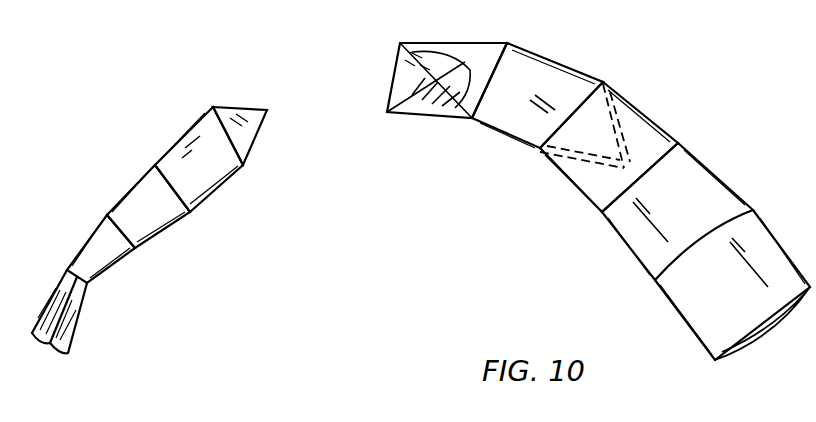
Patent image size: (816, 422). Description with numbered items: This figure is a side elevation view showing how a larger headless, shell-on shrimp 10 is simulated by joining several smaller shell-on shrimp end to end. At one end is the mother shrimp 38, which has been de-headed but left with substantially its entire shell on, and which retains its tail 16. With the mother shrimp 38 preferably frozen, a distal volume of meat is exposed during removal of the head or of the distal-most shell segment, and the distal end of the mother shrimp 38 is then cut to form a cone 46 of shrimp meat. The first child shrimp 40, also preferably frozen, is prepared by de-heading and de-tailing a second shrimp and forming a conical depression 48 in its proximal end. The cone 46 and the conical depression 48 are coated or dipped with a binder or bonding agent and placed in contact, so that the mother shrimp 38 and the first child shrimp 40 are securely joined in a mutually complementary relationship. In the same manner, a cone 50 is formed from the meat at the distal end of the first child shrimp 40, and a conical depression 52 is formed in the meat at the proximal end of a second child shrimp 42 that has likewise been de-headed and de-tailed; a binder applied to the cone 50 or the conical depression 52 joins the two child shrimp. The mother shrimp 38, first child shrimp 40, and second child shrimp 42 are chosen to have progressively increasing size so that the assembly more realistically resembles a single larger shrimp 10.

The single larger shrimp 10 is at (172, 115).
The tail 16 is at (43, 340).
The mother shrimp 38 is at (165, 232).
The cone 46 is at (257, 142).
The conical depression 48 is at (398, 75).
The first child shrimp 40 is at (460, 123).
The cone 50 is at (620, 108).
The conical depression 52 is at (593, 163).
The second child shrimp 42 is at (700, 157).